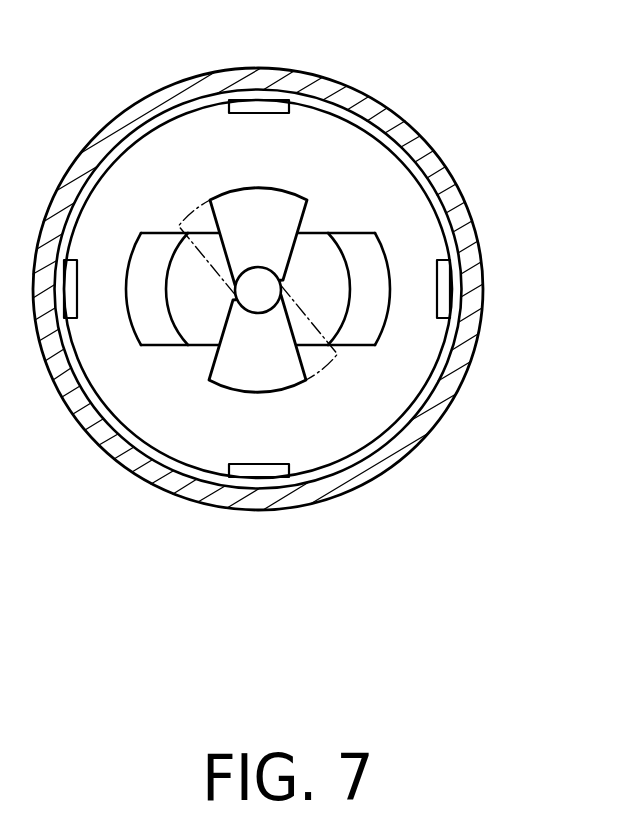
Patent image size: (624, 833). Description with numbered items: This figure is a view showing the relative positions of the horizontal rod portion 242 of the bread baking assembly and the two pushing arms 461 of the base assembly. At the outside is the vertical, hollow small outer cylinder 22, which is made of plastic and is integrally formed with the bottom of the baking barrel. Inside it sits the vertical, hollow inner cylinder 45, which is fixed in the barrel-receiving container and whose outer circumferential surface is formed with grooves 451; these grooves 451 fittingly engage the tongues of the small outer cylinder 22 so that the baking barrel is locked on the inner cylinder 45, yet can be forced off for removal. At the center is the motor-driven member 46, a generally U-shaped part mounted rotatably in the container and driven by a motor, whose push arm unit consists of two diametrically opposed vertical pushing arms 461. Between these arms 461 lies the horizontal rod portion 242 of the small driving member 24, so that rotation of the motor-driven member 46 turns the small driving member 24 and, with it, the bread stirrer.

The small outer cylinder 22 is at (288, 497).
The small driving member 24 is at (232, 185).
The horizontal rod portion 242 is at (288, 198).
The inner cylinder 45 is at (174, 464).
The grooves 451 is at (78, 288).
The motor-driven member 46 is at (390, 290).
The pushing arms 461 is at (372, 253).